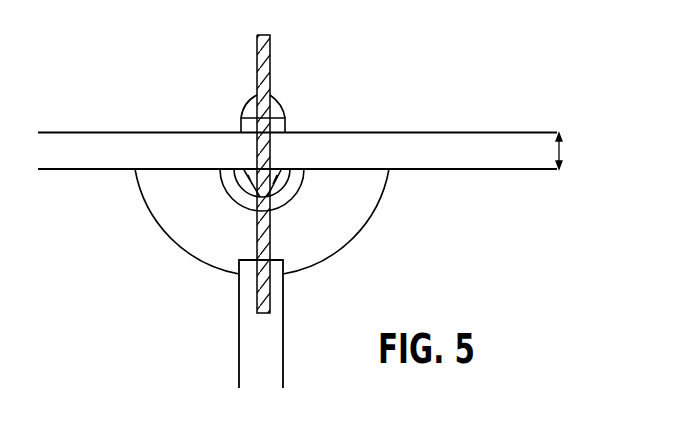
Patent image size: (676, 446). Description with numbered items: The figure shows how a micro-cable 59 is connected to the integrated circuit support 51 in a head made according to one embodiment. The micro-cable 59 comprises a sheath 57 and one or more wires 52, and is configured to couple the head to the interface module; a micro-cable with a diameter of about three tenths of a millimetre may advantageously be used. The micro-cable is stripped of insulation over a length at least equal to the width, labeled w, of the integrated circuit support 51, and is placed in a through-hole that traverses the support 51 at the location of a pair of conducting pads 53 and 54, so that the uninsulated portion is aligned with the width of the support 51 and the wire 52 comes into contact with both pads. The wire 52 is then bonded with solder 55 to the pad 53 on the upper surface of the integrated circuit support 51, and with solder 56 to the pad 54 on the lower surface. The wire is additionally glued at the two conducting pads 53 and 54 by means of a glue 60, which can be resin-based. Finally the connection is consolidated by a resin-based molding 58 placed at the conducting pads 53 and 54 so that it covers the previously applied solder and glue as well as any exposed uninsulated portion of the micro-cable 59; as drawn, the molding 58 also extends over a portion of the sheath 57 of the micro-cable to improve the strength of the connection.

The integrated circuit support 51 is at (73, 170).
The wire 52 is at (258, 55).
The conducting pad 53 is at (279, 124).
The conducting pad 54 is at (278, 178).
The solder 55 is at (250, 110).
The solder 56 is at (252, 185).
The sheath 57 is at (277, 285).
The resin-based molding 58 is at (372, 219).
The micro-cable 59 is at (239, 358).
The glue 60 is at (233, 181).